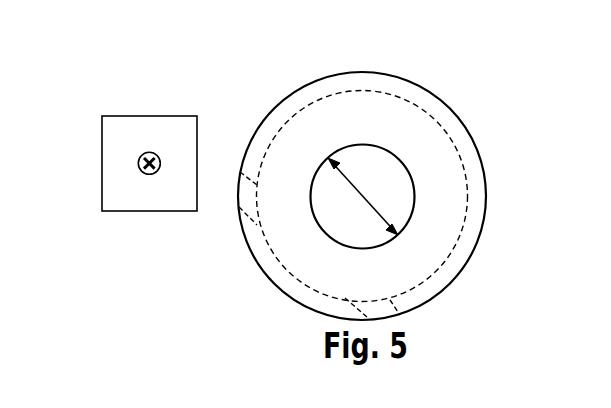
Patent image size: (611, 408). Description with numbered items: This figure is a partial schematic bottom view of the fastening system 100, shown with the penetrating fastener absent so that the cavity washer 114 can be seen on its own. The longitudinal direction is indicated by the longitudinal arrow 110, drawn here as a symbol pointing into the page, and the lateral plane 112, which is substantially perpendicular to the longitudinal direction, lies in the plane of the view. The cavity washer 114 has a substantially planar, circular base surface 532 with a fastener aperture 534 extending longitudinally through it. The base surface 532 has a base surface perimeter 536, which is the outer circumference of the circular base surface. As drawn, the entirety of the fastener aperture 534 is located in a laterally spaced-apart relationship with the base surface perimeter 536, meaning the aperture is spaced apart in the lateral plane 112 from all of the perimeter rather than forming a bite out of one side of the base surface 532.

The fastening system 100 is at (415, 181).
The longitudinal arrow 110 is at (149, 152).
The lateral plane 112 is at (187, 206).
The cavity washer 114 is at (460, 96).
The base surface 532 is at (413, 253).
The fastener aperture 534 is at (395, 182).
The base surface perimeter 536 is at (485, 190).